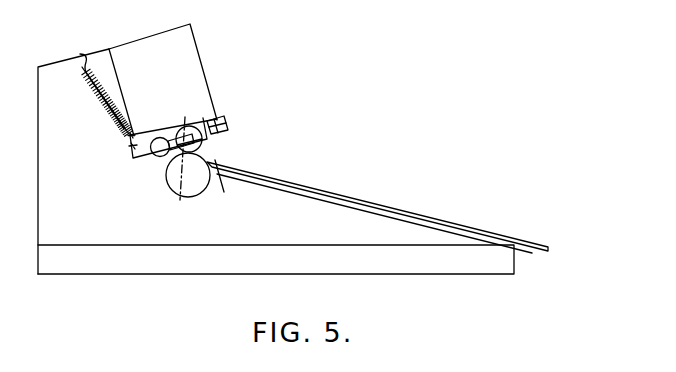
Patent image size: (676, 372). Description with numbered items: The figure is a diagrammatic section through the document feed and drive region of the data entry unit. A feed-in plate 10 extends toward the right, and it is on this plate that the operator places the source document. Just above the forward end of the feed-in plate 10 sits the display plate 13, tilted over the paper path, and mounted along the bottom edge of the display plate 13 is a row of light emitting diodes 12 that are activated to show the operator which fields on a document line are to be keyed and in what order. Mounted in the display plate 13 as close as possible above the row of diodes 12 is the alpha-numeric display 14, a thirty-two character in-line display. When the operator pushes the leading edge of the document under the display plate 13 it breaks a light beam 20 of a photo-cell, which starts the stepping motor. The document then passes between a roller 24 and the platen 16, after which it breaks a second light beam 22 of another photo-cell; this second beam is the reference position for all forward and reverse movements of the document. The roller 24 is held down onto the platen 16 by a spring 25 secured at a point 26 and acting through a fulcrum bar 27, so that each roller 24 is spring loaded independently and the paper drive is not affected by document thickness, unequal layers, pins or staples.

The feed-in plate 10 is at (347, 193).
The light emitting diodes 12 is at (224, 128).
The display plate 13 is at (192, 35).
The alpha-numeric display 14 is at (203, 72).
The platen 16 is at (197, 193).
The light beam 20 is at (222, 190).
The light beam 22 is at (175, 191).
The roller 24 is at (212, 152).
The spring 25 is at (103, 122).
The spring securing point 26 is at (78, 52).
The fulcrum bar 27 is at (147, 156).